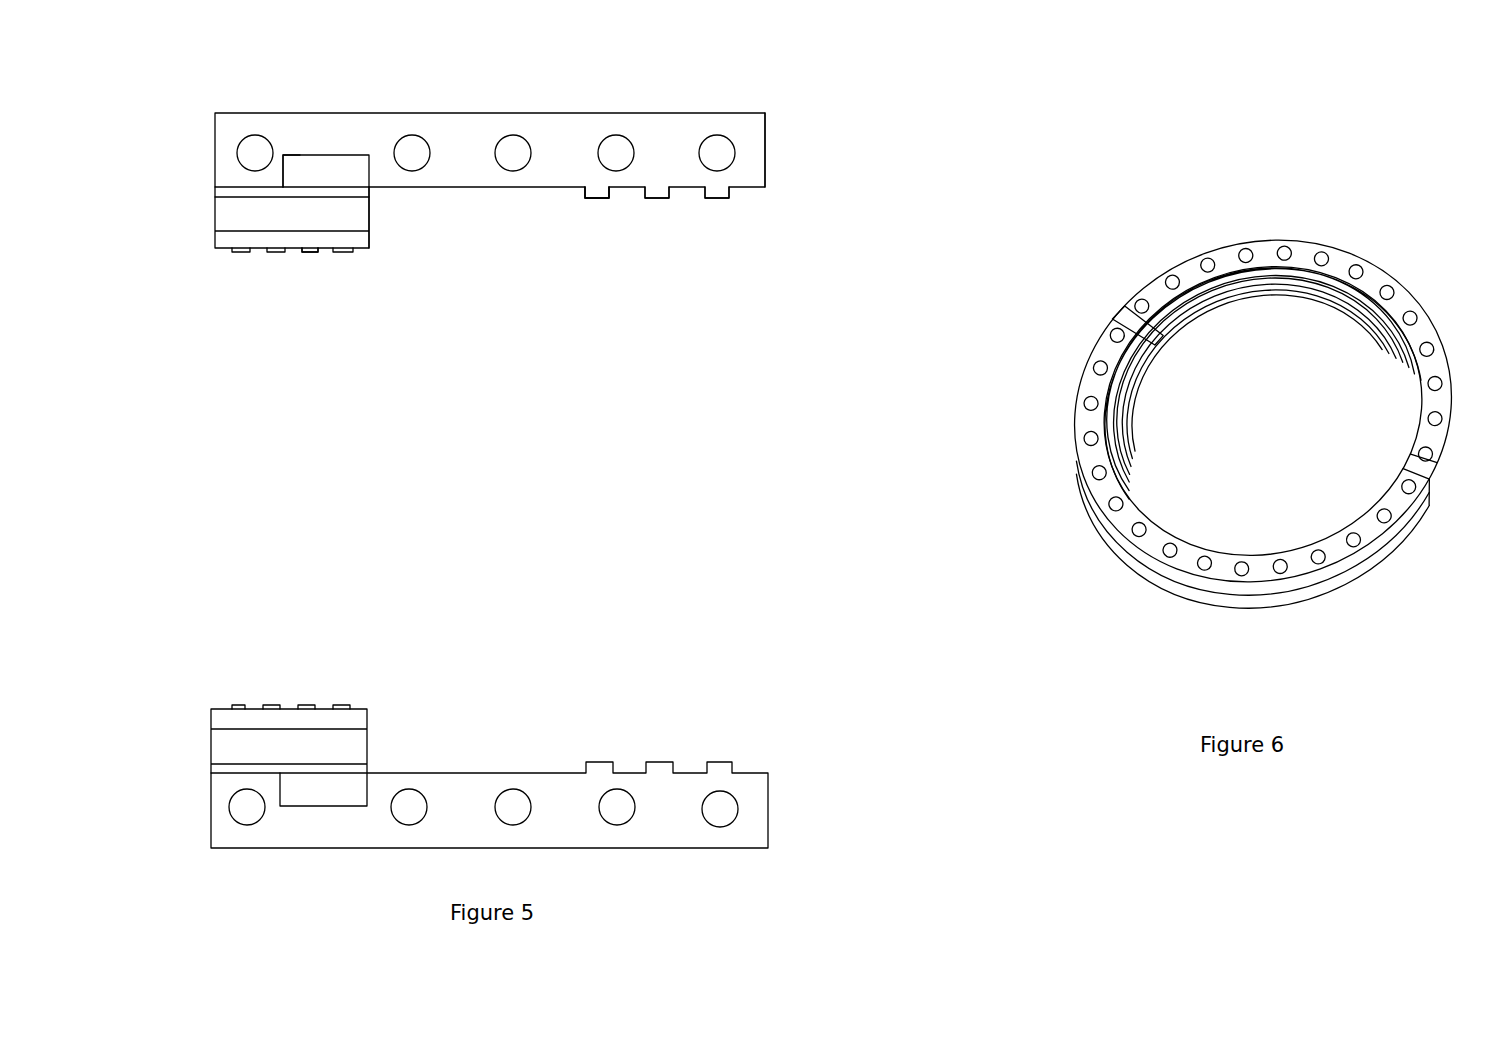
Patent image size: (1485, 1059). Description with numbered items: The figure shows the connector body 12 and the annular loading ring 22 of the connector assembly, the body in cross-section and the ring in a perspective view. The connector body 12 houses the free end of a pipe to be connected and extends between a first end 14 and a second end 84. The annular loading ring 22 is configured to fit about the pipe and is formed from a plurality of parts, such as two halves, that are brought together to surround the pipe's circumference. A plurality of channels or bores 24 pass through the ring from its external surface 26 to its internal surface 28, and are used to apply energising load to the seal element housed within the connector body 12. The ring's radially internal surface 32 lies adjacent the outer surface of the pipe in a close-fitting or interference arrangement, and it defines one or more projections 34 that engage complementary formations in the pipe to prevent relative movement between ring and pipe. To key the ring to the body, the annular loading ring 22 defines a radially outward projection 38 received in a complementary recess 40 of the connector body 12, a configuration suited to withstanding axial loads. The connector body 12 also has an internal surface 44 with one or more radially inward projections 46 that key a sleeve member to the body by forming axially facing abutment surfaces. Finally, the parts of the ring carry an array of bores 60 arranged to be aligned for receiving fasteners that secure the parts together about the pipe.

In FIG. 5, the connector body 12 is at (477, 192).
In FIG. 5, the first end 14 is at (477, 167).
In FIG. 5, the annular loading ring 22 is at (287, 209).
In FIG. 6, the annular loading ring 22 is at (1202, 397).
In FIG. 5, the channels or bores 24 is at (222, 212).
In FIG. 6, the channels or bores 24 is at (1108, 498).
In FIG. 5, the external surface 26 is at (215, 190).
In FIG. 6, the external surface 26 is at (1202, 387).
In FIG. 5, the internal surface 28 is at (370, 235).
In FIG. 5, the radially internal surface 32 is at (343, 268).
In FIG. 6, the radially internal surface 32 is at (1228, 305).
In FIG. 5, the projections 34 is at (310, 252).
In FIG. 6, the projections 34 is at (1153, 340).
In FIG. 5, the projection 38 is at (347, 170).
In FIG. 6, the projection 38 is at (1375, 560).
In FIG. 5, the recess 40 is at (302, 156).
In FIG. 5, the internal surface 44 is at (692, 221).
In FIG. 5, the projections 46 is at (600, 190).
In FIG. 5, the bores 60 is at (716, 148).
In FIG. 5, the second end 84 is at (776, 129).